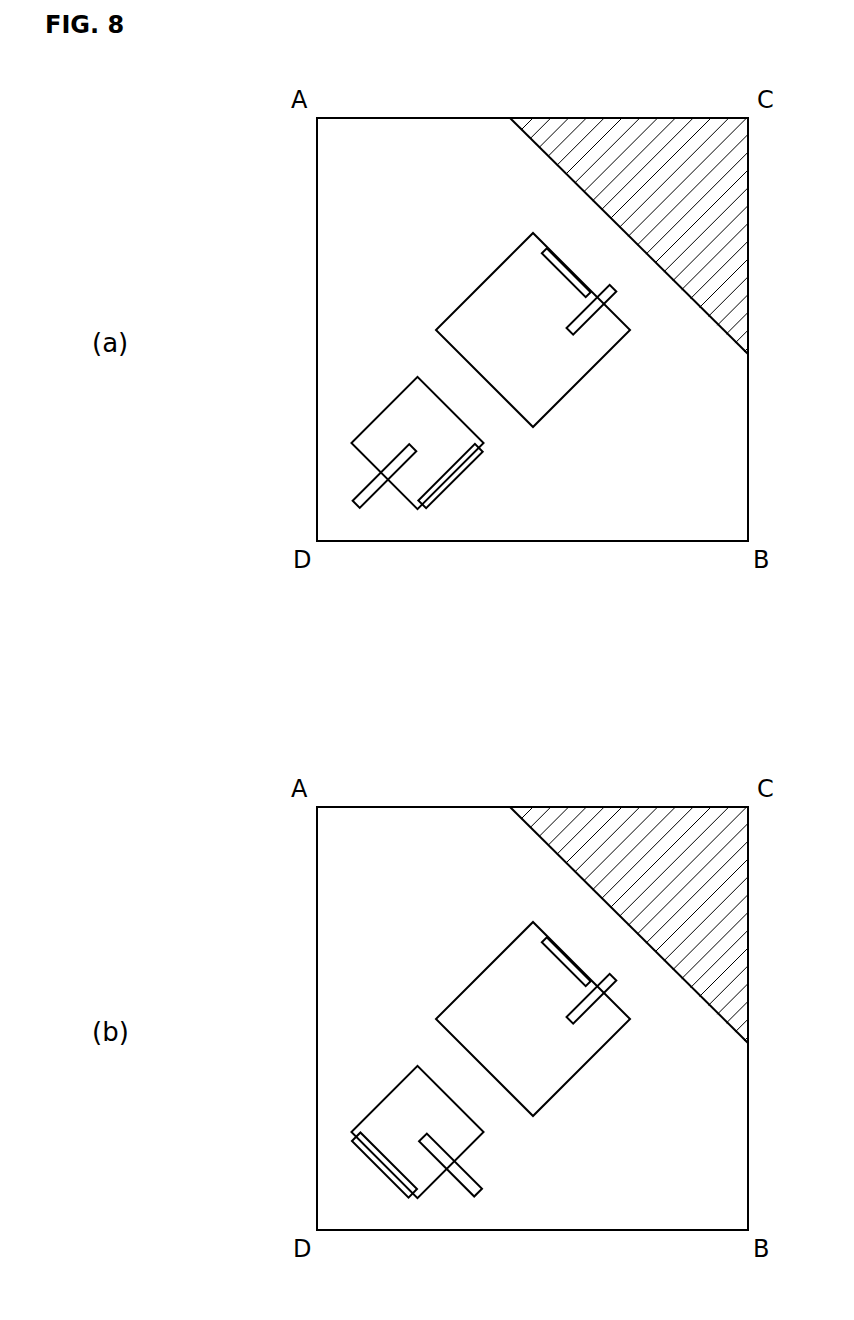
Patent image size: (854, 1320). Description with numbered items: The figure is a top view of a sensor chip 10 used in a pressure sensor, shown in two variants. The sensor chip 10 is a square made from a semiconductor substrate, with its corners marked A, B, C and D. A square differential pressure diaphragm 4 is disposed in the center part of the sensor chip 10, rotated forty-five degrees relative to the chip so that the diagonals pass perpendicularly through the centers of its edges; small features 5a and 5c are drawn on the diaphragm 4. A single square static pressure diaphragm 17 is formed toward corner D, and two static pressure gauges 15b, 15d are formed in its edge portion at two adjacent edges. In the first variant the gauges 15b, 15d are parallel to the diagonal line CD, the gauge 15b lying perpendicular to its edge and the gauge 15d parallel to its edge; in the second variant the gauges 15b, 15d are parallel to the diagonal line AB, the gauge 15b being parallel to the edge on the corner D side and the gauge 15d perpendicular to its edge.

The sensor chip 10 is at (332, 253).
The differential pressure diaphragm 4 is at (473, 317).
The alignment mark / electrode on chip 4 5a is at (568, 276).
The alignment mark / electrode on chip 4 5c is at (610, 292).
The static pressure diaphragm 17 is at (400, 418).
The static pressure gauge 15b is at (365, 495).
The static pressure gauge 15d is at (453, 477).